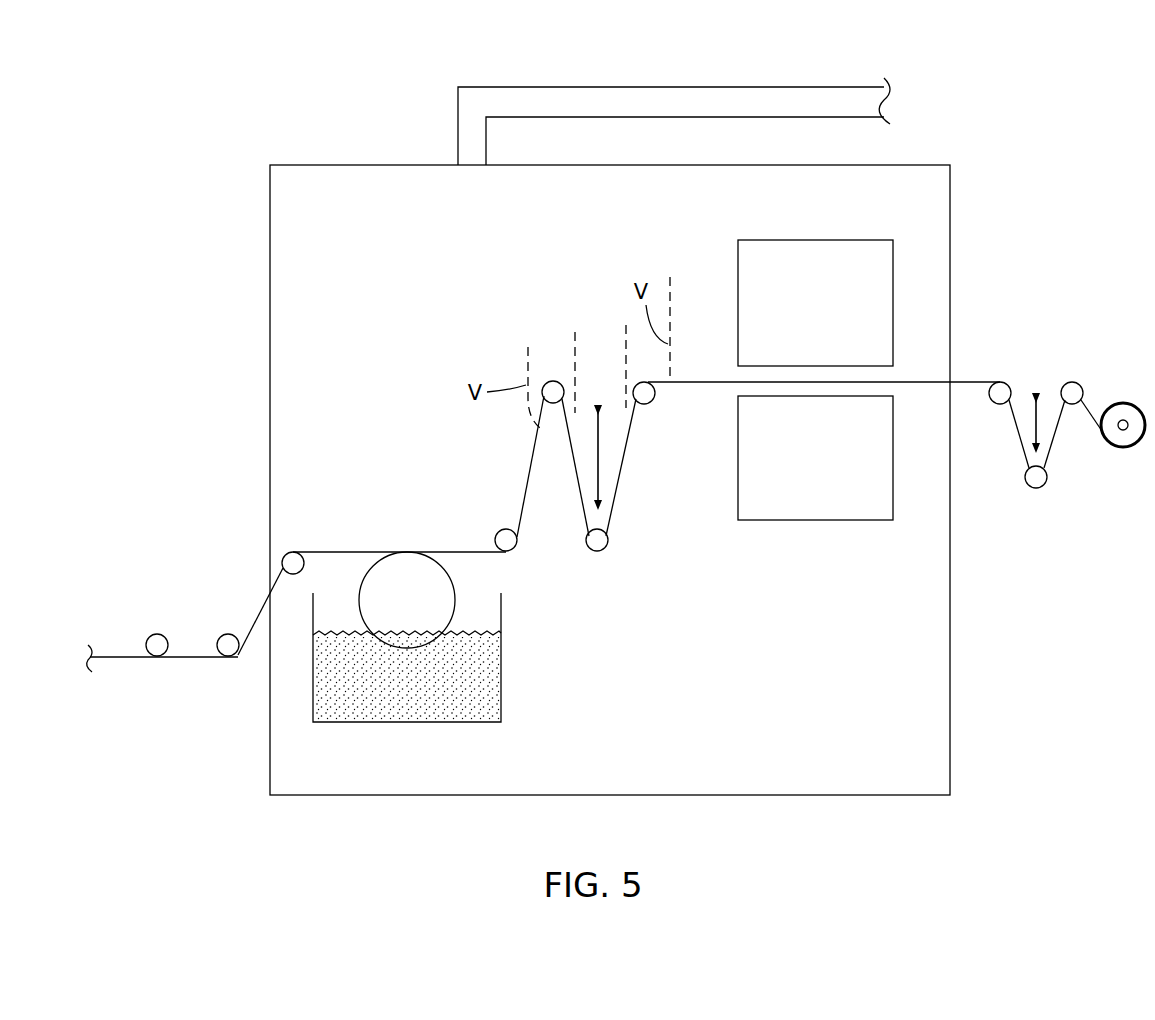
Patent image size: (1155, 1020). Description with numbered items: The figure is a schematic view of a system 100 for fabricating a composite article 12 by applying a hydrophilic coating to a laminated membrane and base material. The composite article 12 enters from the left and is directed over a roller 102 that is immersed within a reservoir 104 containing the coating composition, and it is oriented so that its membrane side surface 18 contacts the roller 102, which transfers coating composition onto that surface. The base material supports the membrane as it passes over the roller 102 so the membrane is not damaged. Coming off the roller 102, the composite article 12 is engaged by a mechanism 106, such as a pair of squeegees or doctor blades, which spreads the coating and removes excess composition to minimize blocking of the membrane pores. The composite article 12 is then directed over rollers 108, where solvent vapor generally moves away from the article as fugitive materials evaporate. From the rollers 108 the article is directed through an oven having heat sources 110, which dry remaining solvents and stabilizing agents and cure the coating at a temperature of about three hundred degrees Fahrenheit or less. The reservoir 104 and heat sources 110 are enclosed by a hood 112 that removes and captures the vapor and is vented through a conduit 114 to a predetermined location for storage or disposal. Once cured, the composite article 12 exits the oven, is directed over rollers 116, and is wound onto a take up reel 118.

The system 100 is at (158, 192).
The composite article 12 is at (197, 665).
The membrane side surface 18 is at (330, 553).
The roller 102 is at (407, 600).
The reservoir 104 is at (502, 689).
The mechanism 106 is at (530, 470).
The rollers 108 is at (553, 380).
The heat sources 110 is at (780, 239).
The hood 112 is at (336, 164).
The conduit 114 is at (676, 86).
The rollers 116 is at (1003, 381).
The take up reel 118 is at (1126, 447).